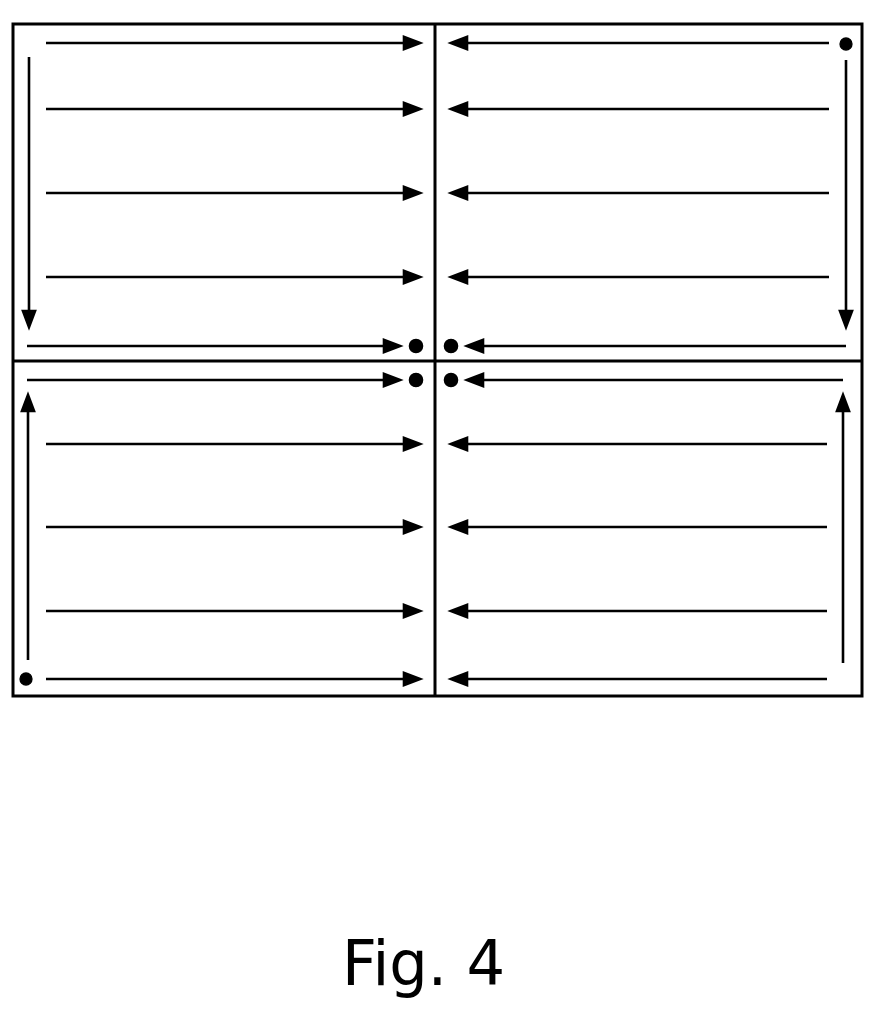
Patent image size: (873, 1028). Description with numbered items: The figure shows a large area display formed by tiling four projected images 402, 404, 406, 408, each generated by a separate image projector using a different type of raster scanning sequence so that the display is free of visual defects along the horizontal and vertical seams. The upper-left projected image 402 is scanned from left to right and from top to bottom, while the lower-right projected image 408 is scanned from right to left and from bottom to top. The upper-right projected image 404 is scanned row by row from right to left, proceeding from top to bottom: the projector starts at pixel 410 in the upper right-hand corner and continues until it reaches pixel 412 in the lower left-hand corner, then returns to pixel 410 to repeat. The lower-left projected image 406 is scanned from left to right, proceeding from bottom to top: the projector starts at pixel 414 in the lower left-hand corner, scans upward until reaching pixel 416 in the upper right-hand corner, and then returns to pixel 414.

The projected image 402 is at (239, 168).
The projected image 404 is at (663, 172).
The projected image 406 is at (230, 508).
The projected image 408 is at (652, 506).
The pixel 410 is at (842, 46).
The pixel 412 is at (453, 343).
The pixel 414 is at (31, 674).
The pixel 416 is at (413, 384).